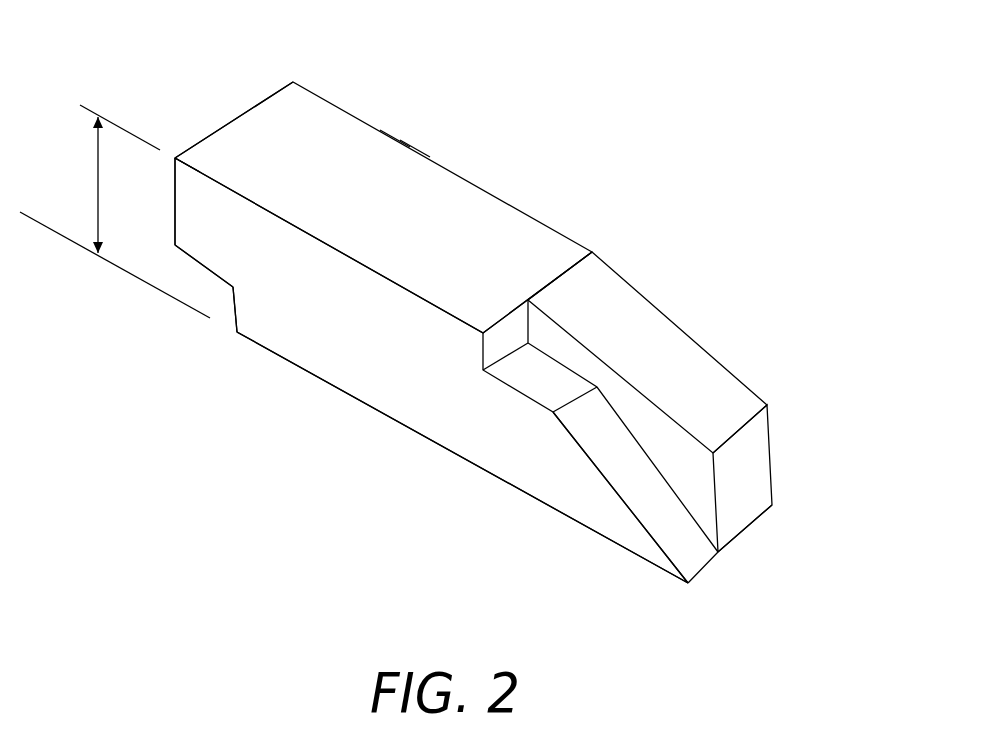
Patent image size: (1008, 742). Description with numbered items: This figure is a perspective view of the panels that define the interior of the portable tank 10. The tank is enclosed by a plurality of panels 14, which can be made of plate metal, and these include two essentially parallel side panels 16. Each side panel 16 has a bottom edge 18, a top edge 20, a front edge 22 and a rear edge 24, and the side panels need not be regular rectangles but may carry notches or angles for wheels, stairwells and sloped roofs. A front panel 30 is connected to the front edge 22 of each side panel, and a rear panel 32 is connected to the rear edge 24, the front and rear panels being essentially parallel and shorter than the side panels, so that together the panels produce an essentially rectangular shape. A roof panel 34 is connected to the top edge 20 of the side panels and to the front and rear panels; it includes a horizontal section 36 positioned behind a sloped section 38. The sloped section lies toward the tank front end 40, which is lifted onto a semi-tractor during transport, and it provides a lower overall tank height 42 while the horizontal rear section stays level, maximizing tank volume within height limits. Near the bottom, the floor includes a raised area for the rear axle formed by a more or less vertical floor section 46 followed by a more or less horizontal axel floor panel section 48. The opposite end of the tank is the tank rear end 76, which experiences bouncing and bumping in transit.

The portable tank 10 is at (663, 182).
The panels 14 is at (322, 130).
The side panels 16 is at (445, 408).
The bottom edge 18 is at (498, 478).
The top edge 20 is at (463, 318).
The front edge 22 is at (770, 450).
The rear edge 24 is at (175, 193).
The front panel 30 is at (747, 495).
The rear panel 32 is at (205, 82).
The roof panel 34 is at (445, 195).
The horizontal section 36 is at (407, 170).
The sloped section 38 is at (652, 332).
The tank front end 40 is at (795, 568).
The overall tank height 42 is at (115, 211).
The vertical floor section 46 is at (223, 300).
The axel floor panel section 48 is at (190, 272).
The tank rear end 76 is at (155, 107).